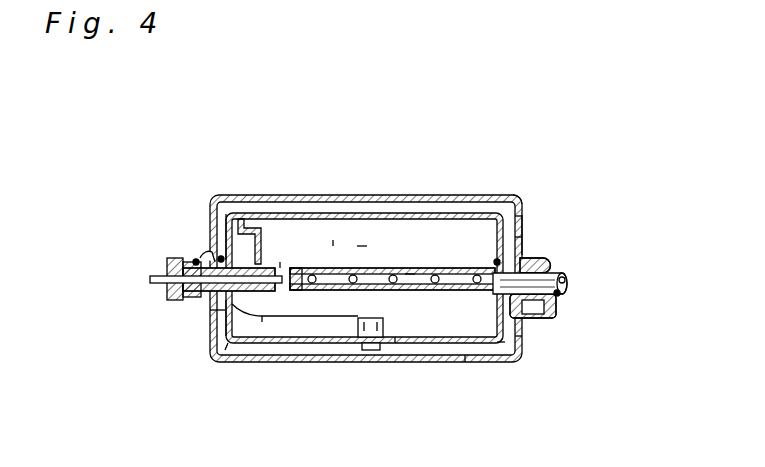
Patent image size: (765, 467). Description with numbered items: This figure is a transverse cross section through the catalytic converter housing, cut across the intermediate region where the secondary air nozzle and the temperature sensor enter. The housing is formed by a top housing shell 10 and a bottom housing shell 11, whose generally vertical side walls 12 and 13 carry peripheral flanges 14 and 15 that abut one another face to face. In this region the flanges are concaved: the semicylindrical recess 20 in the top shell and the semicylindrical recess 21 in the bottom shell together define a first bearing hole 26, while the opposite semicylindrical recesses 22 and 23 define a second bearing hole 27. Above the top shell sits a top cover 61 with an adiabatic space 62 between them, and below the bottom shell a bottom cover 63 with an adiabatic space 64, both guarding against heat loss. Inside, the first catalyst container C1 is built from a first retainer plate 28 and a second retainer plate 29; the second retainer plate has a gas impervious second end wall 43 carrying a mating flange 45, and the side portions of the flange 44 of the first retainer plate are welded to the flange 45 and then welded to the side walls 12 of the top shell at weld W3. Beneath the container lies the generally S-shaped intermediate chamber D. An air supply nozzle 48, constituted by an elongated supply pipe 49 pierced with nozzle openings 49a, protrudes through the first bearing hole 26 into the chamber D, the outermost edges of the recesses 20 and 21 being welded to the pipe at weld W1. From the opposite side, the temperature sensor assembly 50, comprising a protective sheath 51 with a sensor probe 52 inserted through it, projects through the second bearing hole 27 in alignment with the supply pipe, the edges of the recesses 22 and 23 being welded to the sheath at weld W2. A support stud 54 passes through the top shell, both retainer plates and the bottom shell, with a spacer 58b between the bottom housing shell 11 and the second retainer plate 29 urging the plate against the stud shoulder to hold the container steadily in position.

The top housing shell 10 is at (506, 196).
The bottom housing shell 11 is at (440, 346).
The side wall 12 is at (522, 257).
The side wall 13 is at (232, 262).
The peripheral flange 14 is at (200, 258).
The peripheral flange 15 is at (530, 312).
The semicylindrical recess 20 is at (552, 295).
The semicylindrical recess 21 is at (545, 318).
The semicylindrical recess 22 is at (185, 260).
The semicylindrical recess 23 is at (225, 310).
The first bearing hole 26 is at (522, 336).
The second bearing hole 27 is at (206, 256).
The first retainer plate 28 is at (388, 265).
The second retainer plate 29 is at (395, 336).
The second end wall 43 is at (362, 246).
The flange 44 is at (549, 258).
The mating flange 45 is at (522, 237).
The air supply nozzle 48 is at (455, 268).
The supply pipe 49 is at (410, 265).
The nozzle openings 49a is at (268, 320).
The temperature sensor assembly 50 is at (274, 256).
The protective sheath 51 is at (258, 262).
The sensor probe 52 is at (150, 280).
The stud 54 is at (327, 293).
The spacer 58b is at (368, 345).
The top cover 61 is at (522, 215).
The adiabatic space 62 is at (517, 196).
The bottom cover 63 is at (505, 342).
The adiabatic space 64 is at (465, 352).
The first catalyst container C1 is at (334, 243).
The intermediate chamber D is at (225, 350).
The weld W1 is at (559, 292).
The weld W2 is at (195, 262).
The weld W3 is at (221, 258).